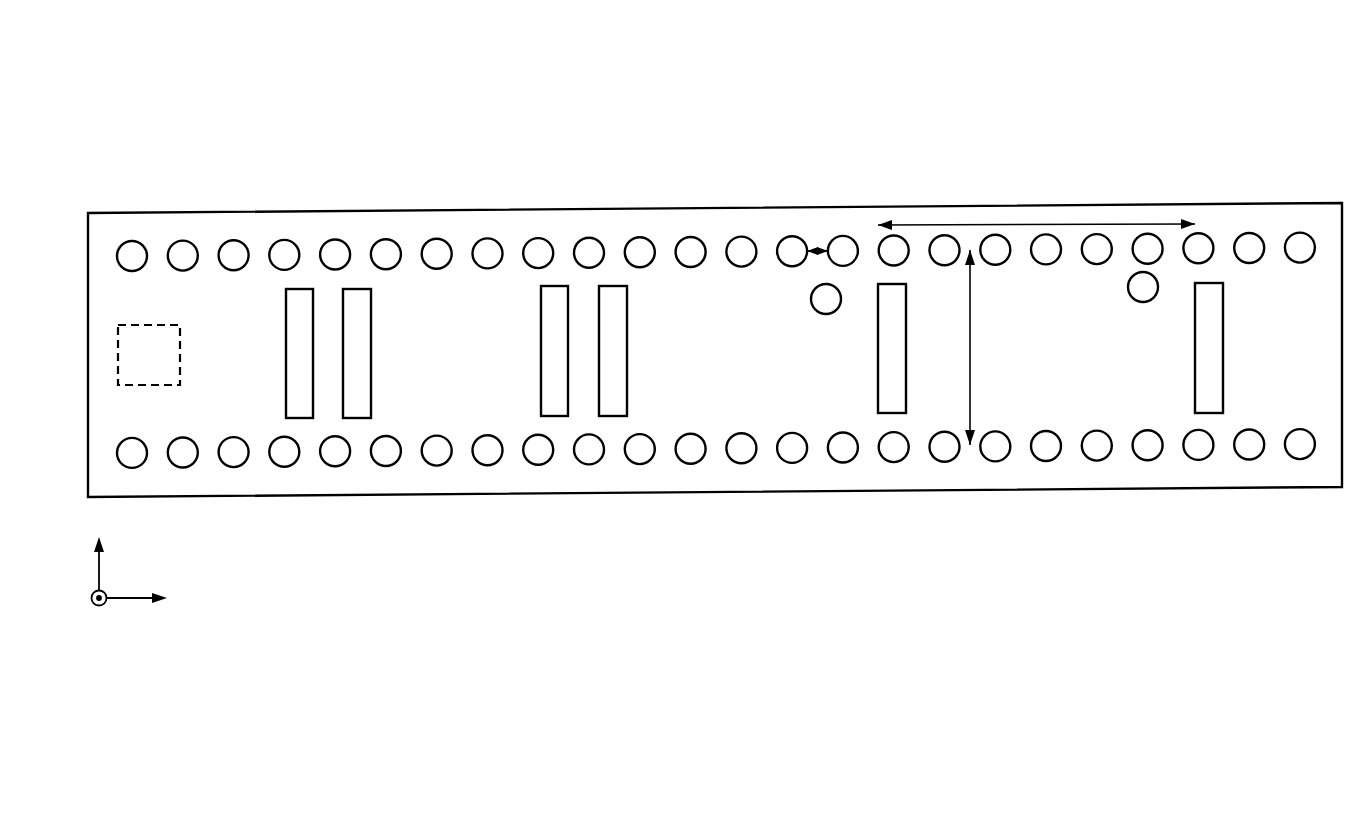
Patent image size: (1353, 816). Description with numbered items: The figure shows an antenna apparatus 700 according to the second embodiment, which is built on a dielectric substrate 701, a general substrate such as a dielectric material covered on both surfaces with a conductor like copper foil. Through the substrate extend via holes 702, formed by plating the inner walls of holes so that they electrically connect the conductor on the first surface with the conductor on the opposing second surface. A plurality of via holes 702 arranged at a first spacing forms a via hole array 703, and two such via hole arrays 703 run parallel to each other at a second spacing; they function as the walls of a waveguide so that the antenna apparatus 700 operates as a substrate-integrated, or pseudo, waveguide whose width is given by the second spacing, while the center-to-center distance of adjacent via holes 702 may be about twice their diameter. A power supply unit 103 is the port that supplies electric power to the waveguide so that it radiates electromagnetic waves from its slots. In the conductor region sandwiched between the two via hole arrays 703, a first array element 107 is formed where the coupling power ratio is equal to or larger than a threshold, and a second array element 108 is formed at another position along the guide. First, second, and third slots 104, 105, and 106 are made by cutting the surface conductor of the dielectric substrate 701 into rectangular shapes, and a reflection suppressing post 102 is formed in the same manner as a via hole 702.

The antenna apparatus 700 is at (1056, 135).
The dielectric substrate 701 is at (1325, 488).
The via hole 702 is at (643, 434).
The via hole array 703 is at (1317, 222).
The reflection suppressing post 102 is at (1132, 298).
The power supply unit 103 is at (183, 352).
The first slot 104 is at (1195, 345).
The second slot 105 is at (372, 402).
The third slot 106 is at (310, 419).
The first array element 107 is at (1077, 300).
The second array element 108 is at (440, 368).